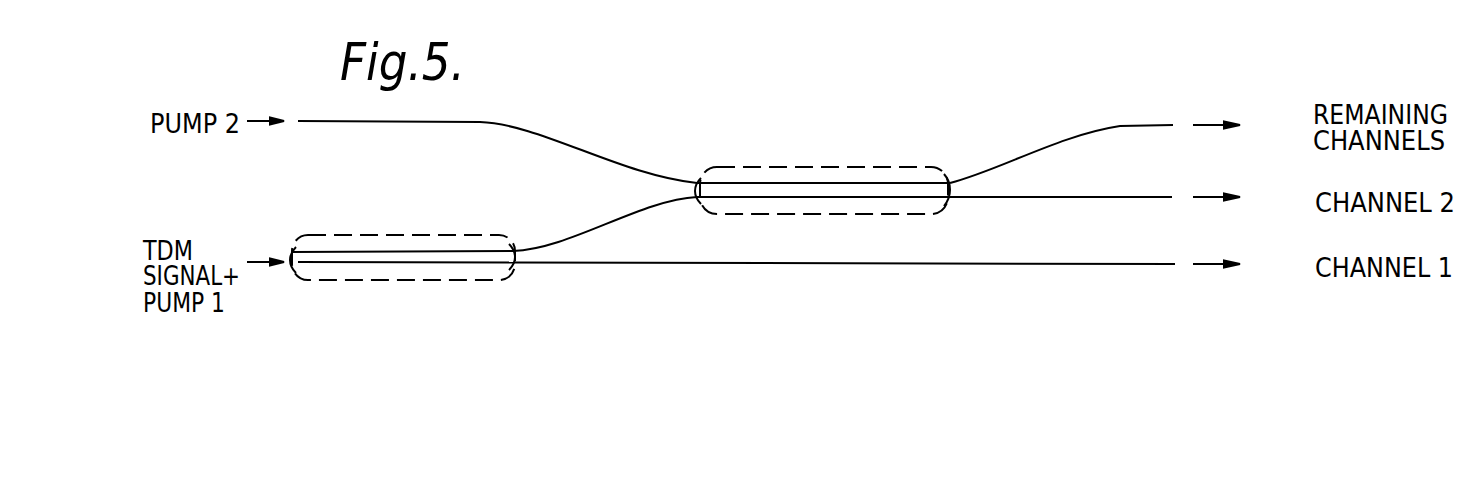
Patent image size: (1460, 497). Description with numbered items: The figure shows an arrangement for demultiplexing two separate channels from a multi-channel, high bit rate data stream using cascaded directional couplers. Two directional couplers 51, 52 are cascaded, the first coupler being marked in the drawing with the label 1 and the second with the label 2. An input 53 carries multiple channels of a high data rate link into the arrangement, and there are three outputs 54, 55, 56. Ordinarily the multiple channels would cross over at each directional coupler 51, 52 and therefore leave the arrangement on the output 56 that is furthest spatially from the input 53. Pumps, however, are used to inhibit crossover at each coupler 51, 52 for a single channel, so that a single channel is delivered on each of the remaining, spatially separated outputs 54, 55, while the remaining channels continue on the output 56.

The first fibre coupler 1 is at (493, 259).
The second fibre coupler 2 is at (822, 178).
The directional coupler 51 is at (481, 281).
The directional coupler 52 is at (868, 168).
The input 53 is at (320, 262).
The output 54 is at (1135, 265).
The output 55 is at (1112, 198).
The output 56 is at (1120, 127).